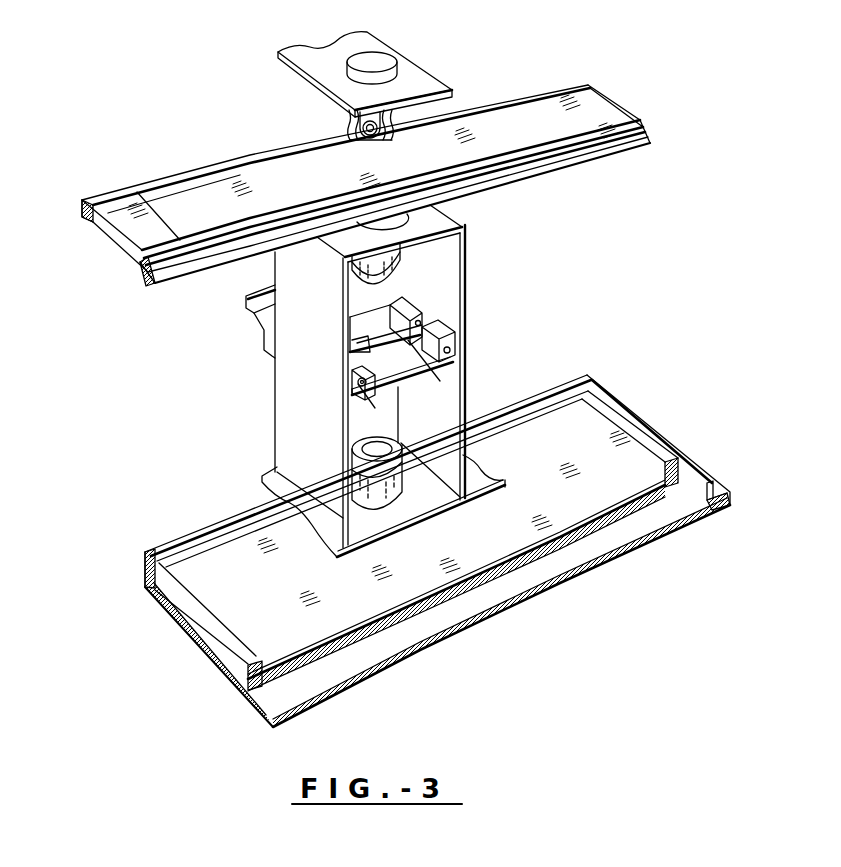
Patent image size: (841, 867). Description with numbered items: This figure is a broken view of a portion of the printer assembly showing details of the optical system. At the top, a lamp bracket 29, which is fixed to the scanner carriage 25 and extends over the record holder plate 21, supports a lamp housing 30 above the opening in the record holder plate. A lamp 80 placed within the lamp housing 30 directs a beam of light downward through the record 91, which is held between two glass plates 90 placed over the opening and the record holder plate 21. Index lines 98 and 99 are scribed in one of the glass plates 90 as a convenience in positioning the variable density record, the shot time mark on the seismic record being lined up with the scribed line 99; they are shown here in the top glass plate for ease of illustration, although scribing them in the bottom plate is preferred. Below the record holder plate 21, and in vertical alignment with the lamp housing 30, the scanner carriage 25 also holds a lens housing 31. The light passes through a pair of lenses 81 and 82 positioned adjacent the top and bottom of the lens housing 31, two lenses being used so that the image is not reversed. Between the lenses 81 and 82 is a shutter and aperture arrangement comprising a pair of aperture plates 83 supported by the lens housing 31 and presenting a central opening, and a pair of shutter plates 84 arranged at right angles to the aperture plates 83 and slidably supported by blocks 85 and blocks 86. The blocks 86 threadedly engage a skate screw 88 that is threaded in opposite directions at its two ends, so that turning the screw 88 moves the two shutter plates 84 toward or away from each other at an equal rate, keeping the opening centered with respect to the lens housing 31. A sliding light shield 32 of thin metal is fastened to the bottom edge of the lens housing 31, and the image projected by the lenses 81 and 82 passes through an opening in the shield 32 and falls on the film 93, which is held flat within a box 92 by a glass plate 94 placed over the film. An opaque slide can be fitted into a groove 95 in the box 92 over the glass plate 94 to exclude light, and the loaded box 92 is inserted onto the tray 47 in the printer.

The record holder plate 21 is at (648, 132).
The scanner carriage 25 is at (248, 314).
The lamp bracket 29 is at (360, 43).
The lamp housing 30 is at (378, 68).
The lens housing 31 is at (466, 248).
The sliding light shield 32 is at (477, 480).
The tray 47 is at (693, 517).
The lamp 80 is at (384, 142).
The lens 81 is at (402, 268).
The lens 82 is at (390, 490).
The aperture plates 83 is at (357, 353).
The shutter plates 84 is at (401, 350).
The blocks 85 is at (410, 308).
The blocks 86 is at (355, 367).
The skate screw 88 is at (375, 408).
The glass plates 90 is at (131, 253).
The record 91 is at (113, 233).
The box 92 is at (668, 457).
The film 93 is at (636, 545).
The glass plate 94 is at (615, 457).
The groove 95 is at (592, 416).
The index line 98 is at (240, 175).
The index line 99 is at (160, 216).